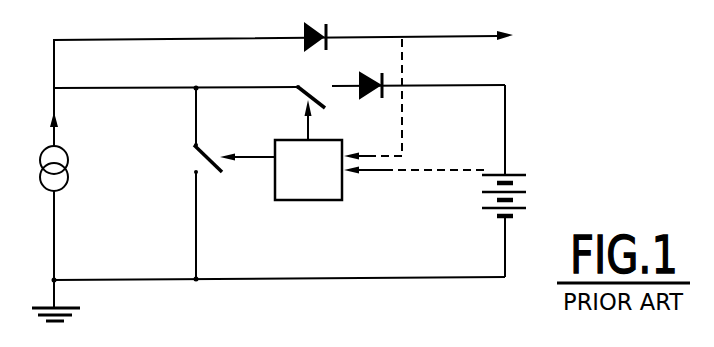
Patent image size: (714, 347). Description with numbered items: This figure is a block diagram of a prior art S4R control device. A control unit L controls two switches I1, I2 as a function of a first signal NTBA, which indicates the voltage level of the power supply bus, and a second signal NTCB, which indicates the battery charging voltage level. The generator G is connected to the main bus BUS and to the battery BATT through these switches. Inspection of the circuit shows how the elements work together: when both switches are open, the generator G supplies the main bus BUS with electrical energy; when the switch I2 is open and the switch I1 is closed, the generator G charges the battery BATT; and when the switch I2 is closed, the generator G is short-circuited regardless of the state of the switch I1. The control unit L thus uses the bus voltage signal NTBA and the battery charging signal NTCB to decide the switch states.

The generator G is at (69, 163).
The switch I1 is at (318, 96).
The switch I2 is at (207, 147).
The control unit L is at (316, 200).
The first signal NTBA is at (402, 142).
The second signal NTCB is at (400, 172).
The battery BATT is at (532, 186).
The main bus BUS is at (530, 34).